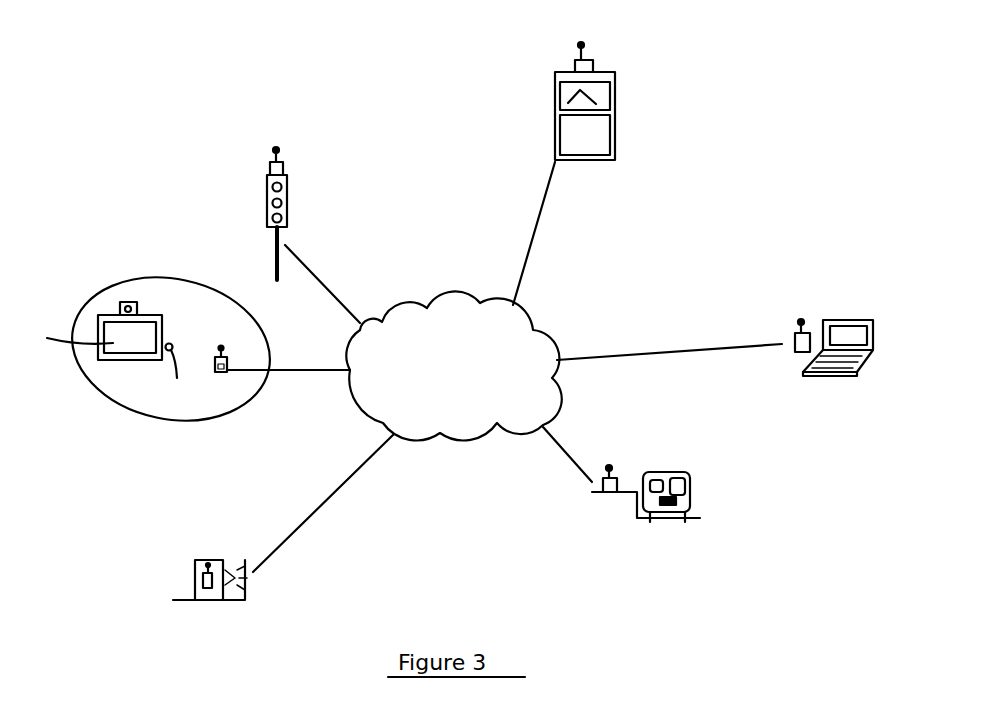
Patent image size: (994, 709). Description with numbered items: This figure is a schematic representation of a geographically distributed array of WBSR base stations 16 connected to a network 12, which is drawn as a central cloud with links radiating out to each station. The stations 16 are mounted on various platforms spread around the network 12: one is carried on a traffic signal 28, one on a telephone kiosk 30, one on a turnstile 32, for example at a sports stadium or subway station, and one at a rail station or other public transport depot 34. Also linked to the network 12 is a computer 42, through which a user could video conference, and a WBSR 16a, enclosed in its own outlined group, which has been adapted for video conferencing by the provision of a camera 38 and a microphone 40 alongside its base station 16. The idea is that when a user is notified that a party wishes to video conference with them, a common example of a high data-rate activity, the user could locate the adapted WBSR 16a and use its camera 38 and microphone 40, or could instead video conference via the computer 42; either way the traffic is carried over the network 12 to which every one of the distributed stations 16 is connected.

The network 12 is at (504, 367).
The WBSR base station 16 is at (595, 68).
The WBSR adapted for video conferencing 16a is at (157, 397).
The traffic signal 28 is at (267, 197).
The telephone kiosk 30 is at (597, 135).
The turnstile 32 is at (223, 560).
The rail station 34 is at (710, 498).
The camera 38 is at (120, 302).
The microphone 40 is at (183, 356).
The computer 42 is at (863, 366).